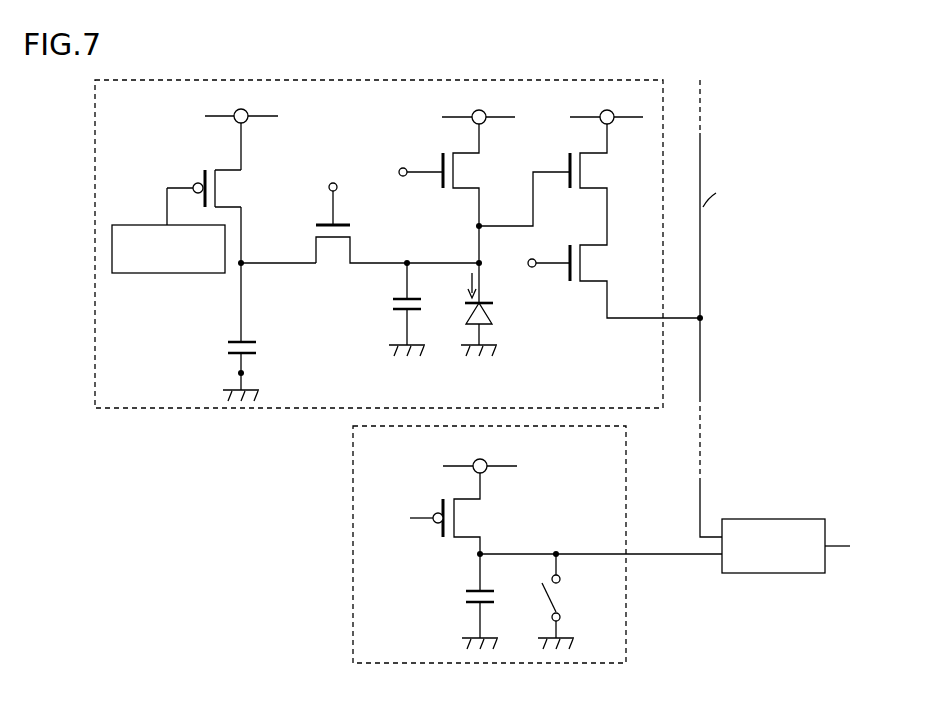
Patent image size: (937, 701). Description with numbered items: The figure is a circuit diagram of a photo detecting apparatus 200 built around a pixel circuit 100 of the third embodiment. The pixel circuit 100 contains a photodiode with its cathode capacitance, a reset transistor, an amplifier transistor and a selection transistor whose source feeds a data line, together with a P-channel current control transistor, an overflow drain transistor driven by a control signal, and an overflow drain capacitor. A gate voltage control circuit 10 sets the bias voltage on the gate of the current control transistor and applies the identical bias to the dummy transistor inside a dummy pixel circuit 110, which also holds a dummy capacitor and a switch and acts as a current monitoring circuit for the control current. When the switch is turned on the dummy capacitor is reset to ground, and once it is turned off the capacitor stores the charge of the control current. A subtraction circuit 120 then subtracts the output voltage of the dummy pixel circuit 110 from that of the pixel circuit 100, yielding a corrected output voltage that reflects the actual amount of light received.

The gate voltage control circuit 10 is at (150, 225).
The pixel circuit 100 is at (95, 133).
The dummy pixel circuit 110 is at (352, 460).
The subtraction circuit 120 is at (776, 518).
The photo detecting apparatus 200 is at (790, 353).